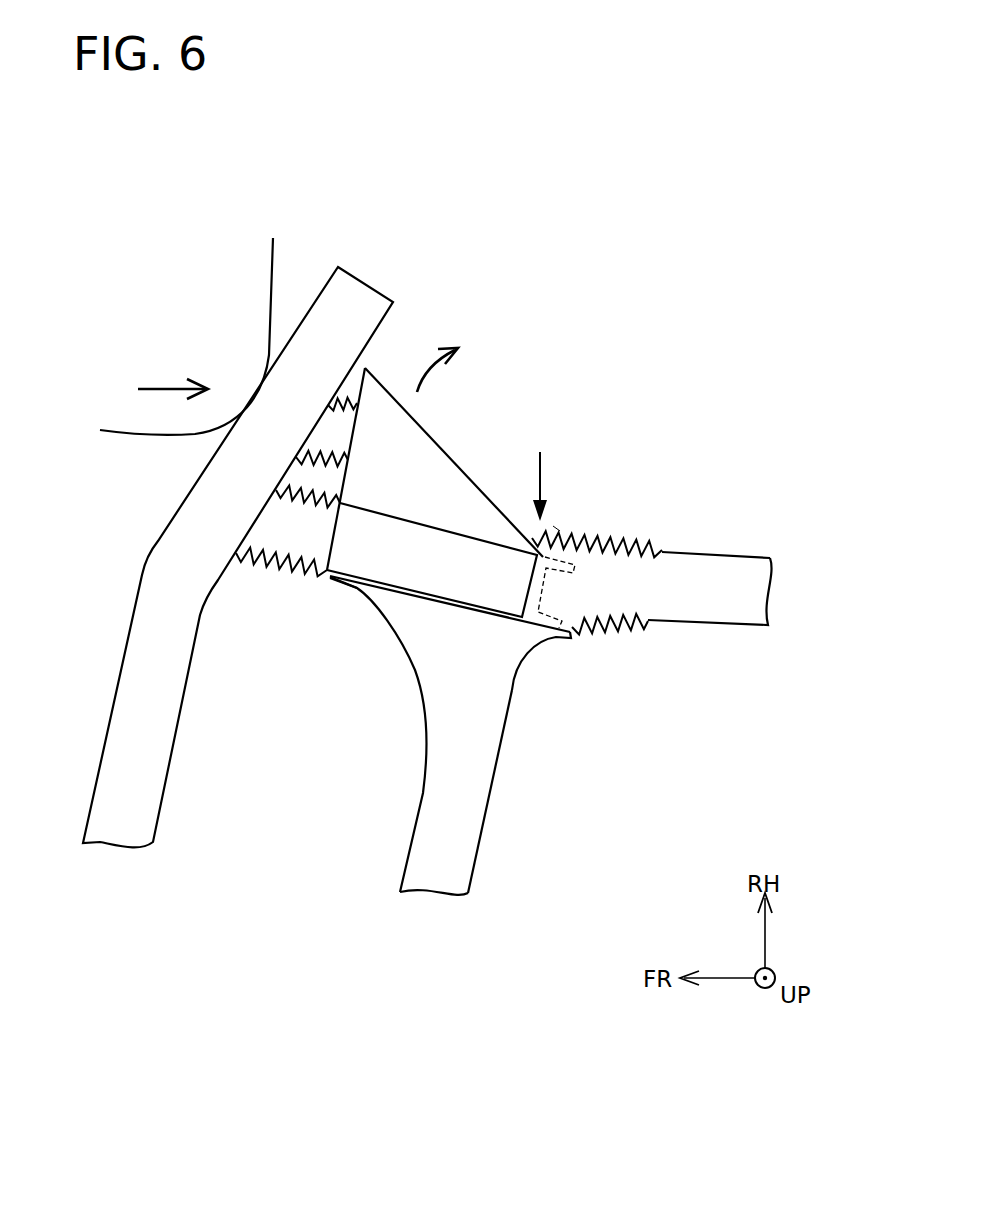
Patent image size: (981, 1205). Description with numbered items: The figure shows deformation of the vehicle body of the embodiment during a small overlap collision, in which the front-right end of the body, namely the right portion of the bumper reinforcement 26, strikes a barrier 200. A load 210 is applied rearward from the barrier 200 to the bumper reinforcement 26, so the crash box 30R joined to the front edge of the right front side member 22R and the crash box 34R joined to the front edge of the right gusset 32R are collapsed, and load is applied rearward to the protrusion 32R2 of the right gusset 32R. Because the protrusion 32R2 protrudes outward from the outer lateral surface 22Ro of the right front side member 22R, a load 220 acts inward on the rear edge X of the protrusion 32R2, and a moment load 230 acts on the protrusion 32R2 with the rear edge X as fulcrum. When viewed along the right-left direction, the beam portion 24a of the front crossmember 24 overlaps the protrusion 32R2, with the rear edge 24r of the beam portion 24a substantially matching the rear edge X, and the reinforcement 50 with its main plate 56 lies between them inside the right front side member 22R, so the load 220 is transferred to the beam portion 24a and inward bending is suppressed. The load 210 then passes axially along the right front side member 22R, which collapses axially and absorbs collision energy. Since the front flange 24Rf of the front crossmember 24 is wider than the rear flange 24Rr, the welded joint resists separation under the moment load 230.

The barrier 200 is at (258, 281).
The load 210 is at (165, 383).
The bumper reinforcement 26 is at (137, 662).
The crash box 34R is at (472, 430).
The right gusset 32R is at (491, 446).
The protrusion 32R2 is at (440, 487).
The crash box 30R is at (280, 542).
The moment load 230 is at (428, 357).
The load 220 is at (542, 480).
The rear edge X is at (557, 528).
The reinforcement 50 is at (623, 546).
The main plate 56 is at (543, 587).
The right front side member 22R is at (675, 544).
The outer lateral surface 22Ro is at (724, 505).
The front crossmember 24 is at (470, 735).
The beam portion 24a is at (470, 735).
The rear edge 24r is at (492, 800).
The rear flange 24Rr is at (557, 635).
The front flange 24Rf is at (358, 585).